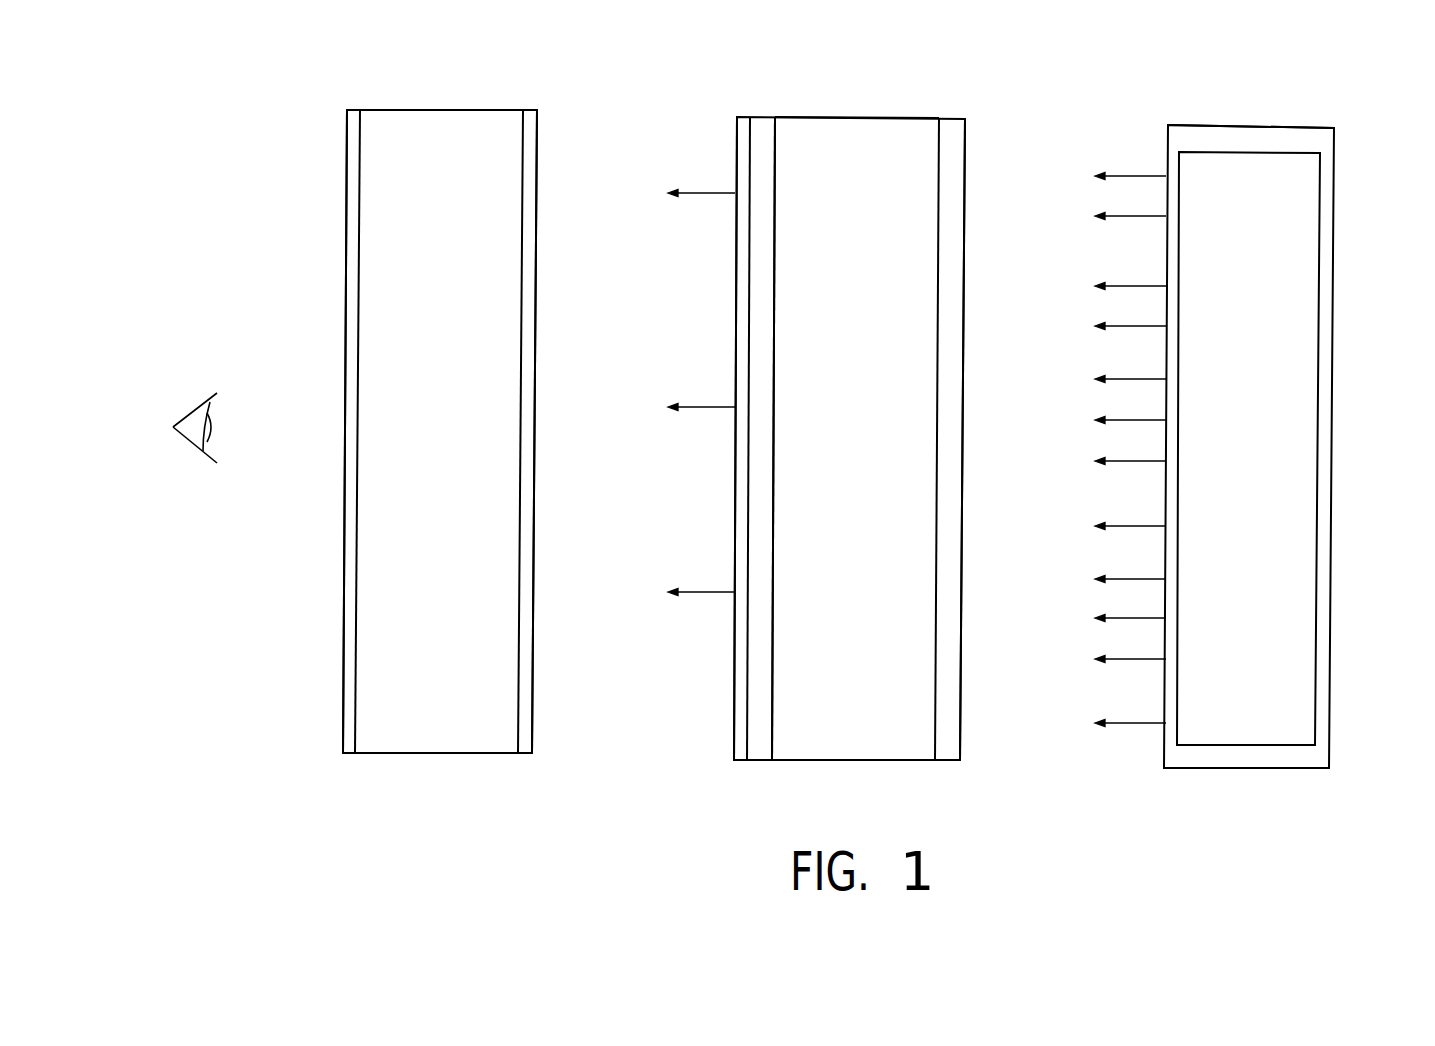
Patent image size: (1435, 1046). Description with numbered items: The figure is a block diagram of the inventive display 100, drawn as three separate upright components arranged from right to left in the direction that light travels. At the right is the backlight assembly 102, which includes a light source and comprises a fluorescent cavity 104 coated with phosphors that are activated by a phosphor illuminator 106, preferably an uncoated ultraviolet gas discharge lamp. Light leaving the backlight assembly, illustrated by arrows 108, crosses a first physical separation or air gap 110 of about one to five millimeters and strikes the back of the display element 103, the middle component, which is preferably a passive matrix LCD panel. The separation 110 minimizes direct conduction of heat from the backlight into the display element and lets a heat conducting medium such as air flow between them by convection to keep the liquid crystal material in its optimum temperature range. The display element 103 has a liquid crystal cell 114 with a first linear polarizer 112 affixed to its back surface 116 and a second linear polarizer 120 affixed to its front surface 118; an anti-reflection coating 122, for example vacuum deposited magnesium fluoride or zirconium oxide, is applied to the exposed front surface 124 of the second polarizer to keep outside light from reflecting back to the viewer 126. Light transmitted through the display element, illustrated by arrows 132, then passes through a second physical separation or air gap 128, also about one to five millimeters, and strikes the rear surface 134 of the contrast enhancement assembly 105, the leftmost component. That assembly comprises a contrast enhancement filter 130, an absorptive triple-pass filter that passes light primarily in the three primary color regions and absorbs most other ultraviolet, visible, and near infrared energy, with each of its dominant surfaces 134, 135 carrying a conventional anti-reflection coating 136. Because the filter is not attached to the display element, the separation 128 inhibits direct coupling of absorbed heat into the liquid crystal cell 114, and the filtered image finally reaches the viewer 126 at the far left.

The display 100 is at (298, 97).
The backlight assembly 102 is at (1264, 103).
The display element 103 is at (884, 92).
The fluorescent cavity 104 is at (1275, 140).
The contrast enhancement assembly 105 is at (449, 85).
The phosphor illuminator 106 is at (1307, 290).
The arrows illustrating light 108 is at (1123, 328).
The first physical separation or air gap 110 is at (1031, 766).
The first linear polarizer 112 is at (947, 271).
The liquid crystal cell 114 is at (898, 136).
The back surface of the liquid crystal cell 116 is at (935, 727).
The front surface of the liquid crystal cell 118 is at (772, 719).
The second linear polarizer 120 is at (760, 147).
The anti-reflection coating 122 is at (740, 686).
The exposed front surface 124 is at (733, 740).
The viewer 126 is at (198, 450).
The second physical separation or air gap 128 is at (613, 750).
The contrast enhancement filter 130 is at (487, 128).
The arrows illustrating light 132 is at (698, 410).
The rear surface of the contrast enhancement assembly 134 is at (533, 283).
The dominant surface of the contrast enhancement filter 135 is at (355, 635).
The anti-reflection coating 136 is at (530, 340).